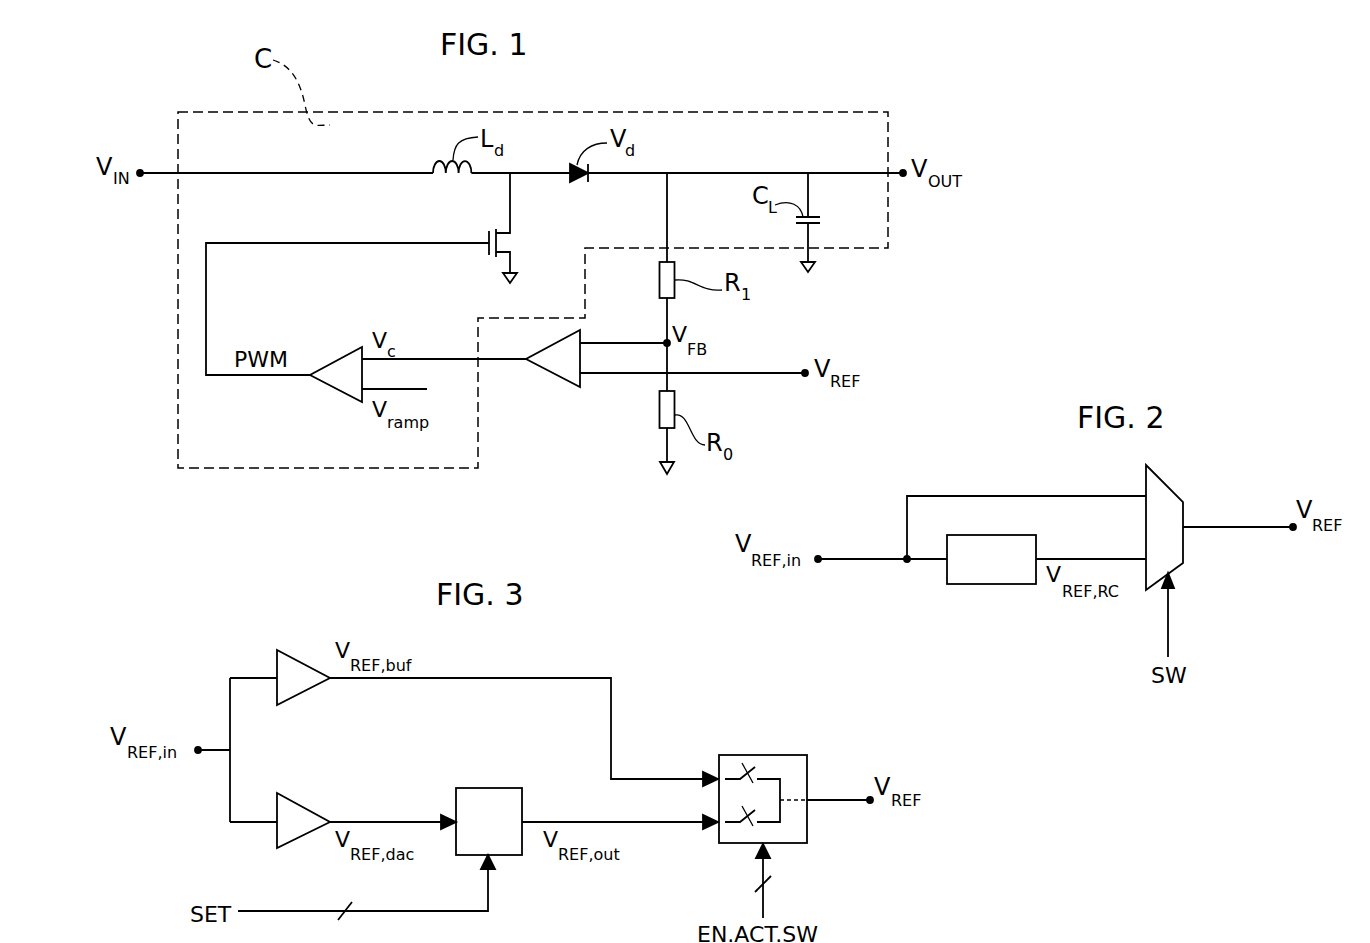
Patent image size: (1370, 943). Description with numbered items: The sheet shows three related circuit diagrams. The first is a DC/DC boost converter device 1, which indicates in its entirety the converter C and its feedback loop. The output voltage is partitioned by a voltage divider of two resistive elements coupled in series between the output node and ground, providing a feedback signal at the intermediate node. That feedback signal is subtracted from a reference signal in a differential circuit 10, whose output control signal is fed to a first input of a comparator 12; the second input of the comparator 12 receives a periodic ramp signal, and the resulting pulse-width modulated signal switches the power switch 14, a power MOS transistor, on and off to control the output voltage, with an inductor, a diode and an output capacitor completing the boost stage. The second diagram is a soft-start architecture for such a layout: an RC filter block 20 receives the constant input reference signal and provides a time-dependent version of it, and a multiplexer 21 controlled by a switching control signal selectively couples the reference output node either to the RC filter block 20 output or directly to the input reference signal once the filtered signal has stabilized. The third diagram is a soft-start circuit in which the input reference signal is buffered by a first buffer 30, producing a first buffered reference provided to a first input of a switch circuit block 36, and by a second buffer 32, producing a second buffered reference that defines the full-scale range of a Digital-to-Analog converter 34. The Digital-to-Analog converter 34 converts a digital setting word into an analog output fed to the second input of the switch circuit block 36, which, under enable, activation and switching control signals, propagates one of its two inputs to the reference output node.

In FIG. 1, the converter device 1 is at (951, 134).
In FIG. 1, the differential circuit 10 is at (560, 374).
In FIG. 1, the comparator 12 is at (338, 379).
In FIG. 1, the power switch 14 is at (488, 247).
In FIG. 2, the RC filter block 20 is at (1003, 570).
In FIG. 2, the multiplexer 21 is at (1175, 505).
In FIG. 3, the first buffer 30 is at (283, 664).
In FIG. 3, the second buffer 32 is at (300, 811).
In FIG. 3, the Digital-to-Analog converter 34 is at (488, 805).
In FIG. 3, the switch circuit block 36 is at (796, 757).